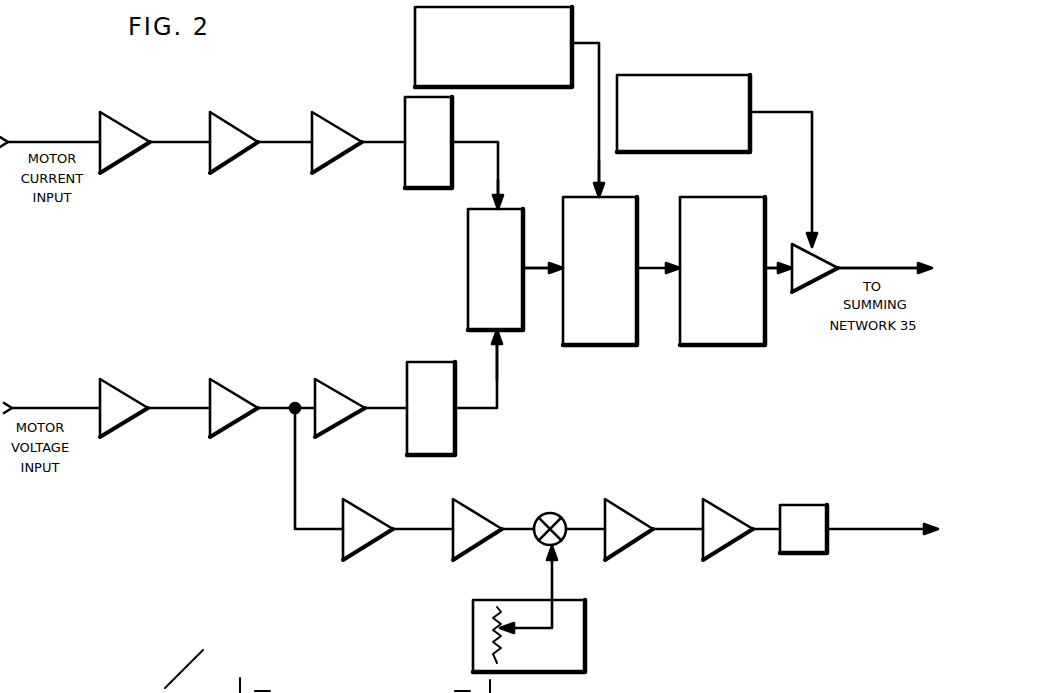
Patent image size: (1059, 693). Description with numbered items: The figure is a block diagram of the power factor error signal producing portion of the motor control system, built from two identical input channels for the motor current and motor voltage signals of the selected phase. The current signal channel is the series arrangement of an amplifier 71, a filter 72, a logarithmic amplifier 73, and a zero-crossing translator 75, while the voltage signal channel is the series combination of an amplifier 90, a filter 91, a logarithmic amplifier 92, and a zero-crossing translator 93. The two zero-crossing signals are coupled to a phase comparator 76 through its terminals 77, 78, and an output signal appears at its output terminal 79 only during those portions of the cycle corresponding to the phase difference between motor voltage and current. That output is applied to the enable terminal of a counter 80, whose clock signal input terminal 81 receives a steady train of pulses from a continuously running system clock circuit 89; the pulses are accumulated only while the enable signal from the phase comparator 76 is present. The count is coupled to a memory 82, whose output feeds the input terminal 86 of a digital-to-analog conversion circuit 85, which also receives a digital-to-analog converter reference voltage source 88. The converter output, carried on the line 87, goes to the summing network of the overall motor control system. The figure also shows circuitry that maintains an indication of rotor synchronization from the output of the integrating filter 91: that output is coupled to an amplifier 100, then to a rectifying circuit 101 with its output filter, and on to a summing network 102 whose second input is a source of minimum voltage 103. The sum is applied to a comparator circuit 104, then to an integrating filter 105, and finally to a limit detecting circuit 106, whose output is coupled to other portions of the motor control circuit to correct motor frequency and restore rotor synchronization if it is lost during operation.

The amplifier 71 is at (125, 128).
The filter 72 is at (233, 128).
The logarithmic amplifier 73 is at (330, 128).
The zero-crossing translator 75 is at (413, 178).
The phase comparator 76 is at (470, 300).
The input terminal 77 is at (500, 204).
The input terminal 78 is at (505, 338).
The output terminal 79 is at (530, 270).
The counter 80 is at (632, 206).
The clock signal input terminal 81 is at (596, 188).
The memory 82 is at (718, 335).
The digital-to-analog conversion circuit 85 is at (808, 281).
The input terminal 86 is at (788, 276).
The output line 87 is at (845, 266).
The digital-to-analog converter reference voltage source 88 is at (683, 75).
The system clock circuit 89 is at (418, 33).
The amplifier 90 is at (108, 390).
The filter 91 is at (220, 388).
The logarithmic amplifier 92 is at (333, 388).
The zero-crossing translator 93 is at (440, 440).
The amplifier 100 is at (358, 540).
The rectifying circuit 101 is at (470, 535).
The summing network 102 is at (550, 513).
The source of minimum voltage 103 is at (592, 622).
The comparator circuit 104 is at (622, 507).
The integrating filter 105 is at (716, 507).
The limit detecting circuit 106 is at (797, 507).